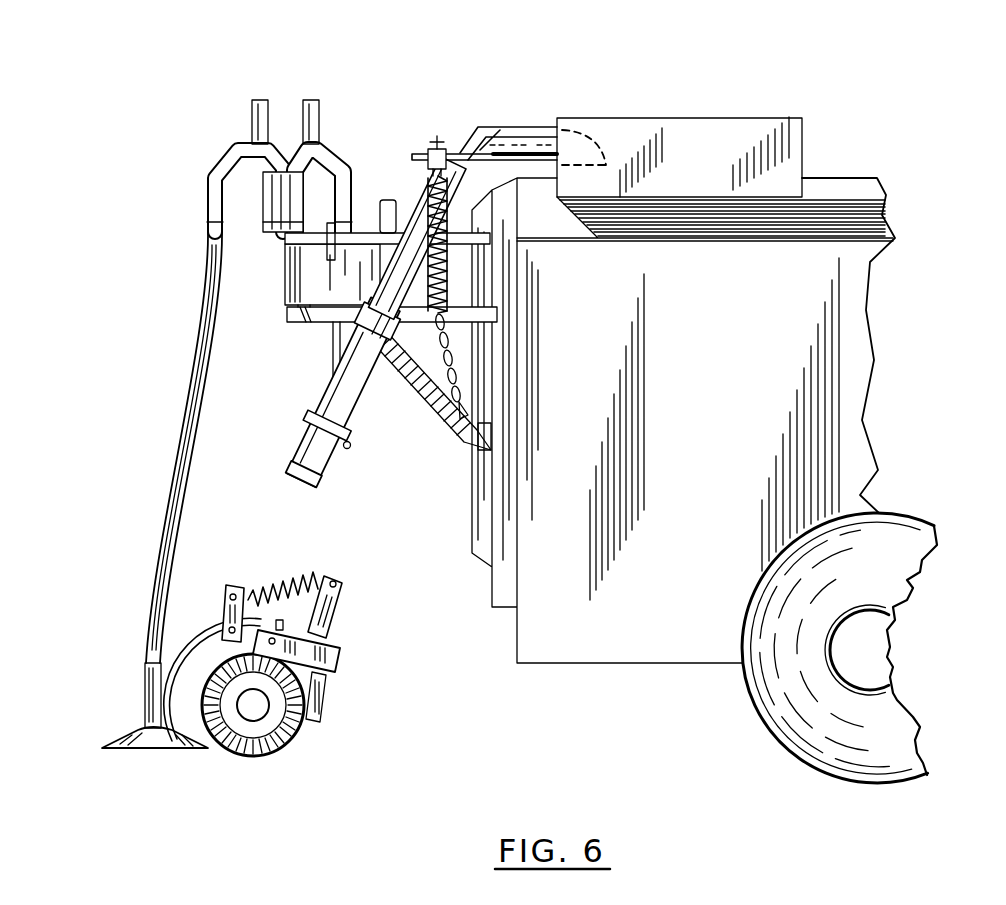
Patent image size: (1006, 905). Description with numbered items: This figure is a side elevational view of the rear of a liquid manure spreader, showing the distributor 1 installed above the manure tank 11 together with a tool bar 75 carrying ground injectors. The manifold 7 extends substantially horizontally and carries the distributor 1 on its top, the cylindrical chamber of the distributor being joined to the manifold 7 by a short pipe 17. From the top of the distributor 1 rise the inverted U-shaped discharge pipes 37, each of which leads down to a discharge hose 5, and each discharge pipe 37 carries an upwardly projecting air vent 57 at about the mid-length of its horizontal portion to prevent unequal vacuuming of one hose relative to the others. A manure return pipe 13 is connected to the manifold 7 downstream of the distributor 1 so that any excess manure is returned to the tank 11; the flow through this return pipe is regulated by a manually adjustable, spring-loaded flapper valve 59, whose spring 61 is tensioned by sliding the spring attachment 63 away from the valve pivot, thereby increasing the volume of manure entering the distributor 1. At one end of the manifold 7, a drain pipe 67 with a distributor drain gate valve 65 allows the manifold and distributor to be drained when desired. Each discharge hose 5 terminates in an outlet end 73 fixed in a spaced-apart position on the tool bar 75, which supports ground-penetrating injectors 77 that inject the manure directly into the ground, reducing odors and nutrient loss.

The distributor 1 is at (268, 333).
The discharge hose 5 is at (190, 417).
The manifold 7 is at (330, 387).
The manure tank 11 is at (846, 150).
The manure return pipe 13 is at (416, 203).
The short pipe 17 is at (333, 347).
The discharge pipe 37 is at (240, 208).
The air vent 57 is at (303, 120).
The flapper valve 59 is at (518, 142).
The spring 61 is at (447, 277).
The spring attachment 63 is at (436, 136).
The distributor drain gate valve 65 is at (351, 445).
The drain pipe 67 is at (315, 482).
The outlet end 73 is at (148, 728).
The tool bar 75 is at (338, 625).
The ground-penetrating injector 77 is at (368, 660).